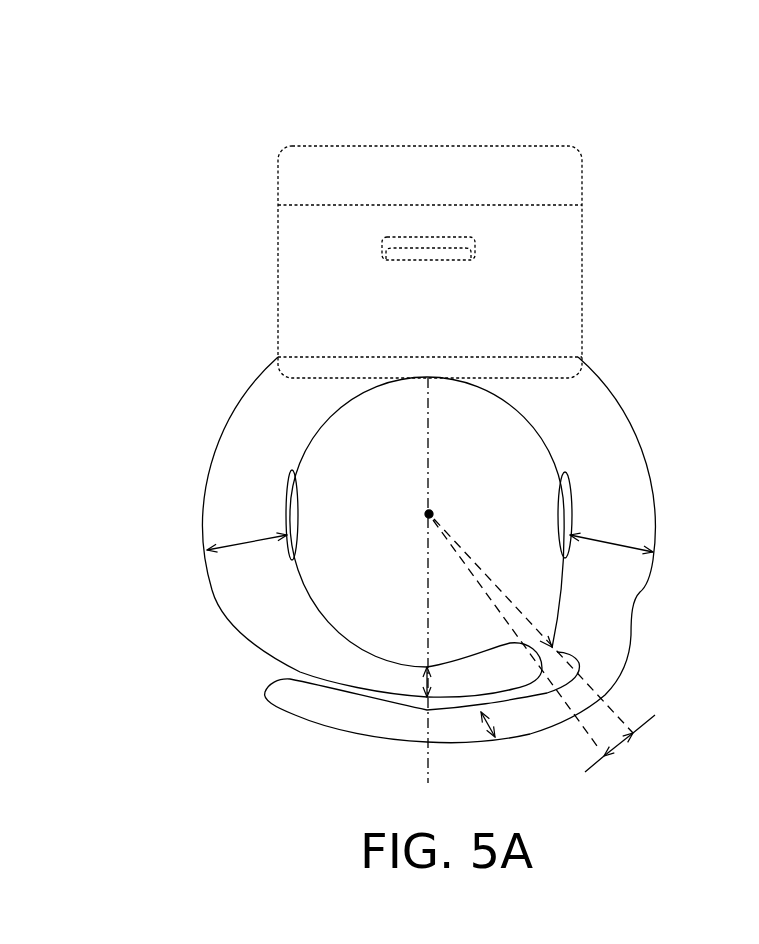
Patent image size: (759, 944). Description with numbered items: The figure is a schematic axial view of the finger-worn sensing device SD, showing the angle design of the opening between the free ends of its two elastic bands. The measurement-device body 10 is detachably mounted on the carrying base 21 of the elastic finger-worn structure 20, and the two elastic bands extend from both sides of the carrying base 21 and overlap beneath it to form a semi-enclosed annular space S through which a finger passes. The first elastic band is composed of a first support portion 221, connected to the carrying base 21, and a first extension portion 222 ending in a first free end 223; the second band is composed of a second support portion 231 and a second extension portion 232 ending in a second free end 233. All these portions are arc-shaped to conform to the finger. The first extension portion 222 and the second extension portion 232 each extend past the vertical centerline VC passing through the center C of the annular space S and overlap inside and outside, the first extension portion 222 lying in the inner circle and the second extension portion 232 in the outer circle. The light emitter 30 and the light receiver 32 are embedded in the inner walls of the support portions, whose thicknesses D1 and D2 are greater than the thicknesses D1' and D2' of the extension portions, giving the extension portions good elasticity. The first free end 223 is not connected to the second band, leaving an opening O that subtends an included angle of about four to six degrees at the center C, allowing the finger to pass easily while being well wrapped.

The finger-worn sensing device SD is at (184, 53).
The measurement-device body 10 is at (383, 223).
The carrying base 21 is at (302, 292).
The elastic finger-worn structure 20 is at (425, 562).
The first support portion 221 is at (243, 478).
The second support portion 231 is at (605, 457).
The first extension portion 222 is at (310, 672).
The first free end 223 is at (514, 668).
The second extension portion 232 is at (318, 722).
The second free end 233 is at (262, 697).
The light emitter 30 is at (288, 507).
The light receiver 32 is at (570, 508).
The annular space S is at (497, 435).
The center C is at (441, 514).
The opening O is at (557, 652).
The vertical centerline VC is at (429, 596).
The thickness of the first support portion D1 is at (205, 537).
The thickness of the second support portion D2 is at (653, 538).
The thickness of the first extension portion D1' is at (271, 666).
The thickness of the second extension portion D2' is at (473, 752).